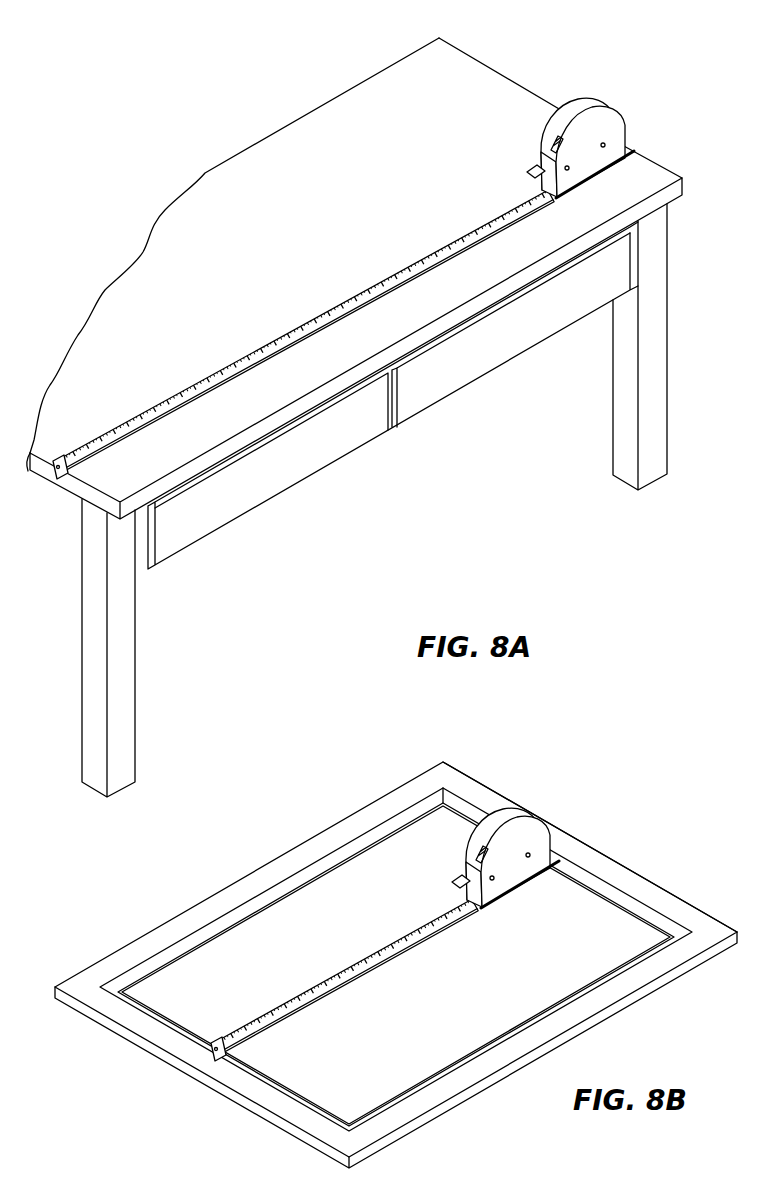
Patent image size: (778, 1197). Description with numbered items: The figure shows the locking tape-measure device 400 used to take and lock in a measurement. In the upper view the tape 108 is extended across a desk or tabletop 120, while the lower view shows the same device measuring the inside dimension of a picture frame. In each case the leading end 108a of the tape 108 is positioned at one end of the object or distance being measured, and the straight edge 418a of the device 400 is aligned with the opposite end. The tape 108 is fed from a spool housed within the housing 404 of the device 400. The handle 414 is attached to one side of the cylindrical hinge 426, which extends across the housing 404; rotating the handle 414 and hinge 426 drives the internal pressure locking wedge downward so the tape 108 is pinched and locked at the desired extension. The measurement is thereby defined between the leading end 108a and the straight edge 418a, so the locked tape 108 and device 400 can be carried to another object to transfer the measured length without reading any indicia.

In FIG. 8A, the device 400 is at (588, 123).
In FIG. 8B, the device 400 is at (503, 841).
In FIG. 8A, the housing 404 is at (609, 119).
In FIG. 8B, the housing 404 is at (552, 844).
In FIG. 8A, the handle 414 is at (530, 167).
In FIG. 8B, the handle 414 is at (419, 874).
In FIG. 8A, the straight edge 418a is at (633, 145).
In FIG. 8B, the straight edge 418a is at (584, 846).
In FIG. 8A, the hinge 426 is at (569, 170).
In FIG. 8B, the hinge 426 is at (524, 910).
In FIG. 8A, the desk or tabletop 120 is at (286, 238).
In FIG. 8A, the tape 108 is at (292, 330).
In FIG. 8B, the tape 108 is at (383, 942).
In FIG. 8A, the leading end 108a is at (62, 478).
In FIG. 8B, the leading end 108a is at (213, 1052).